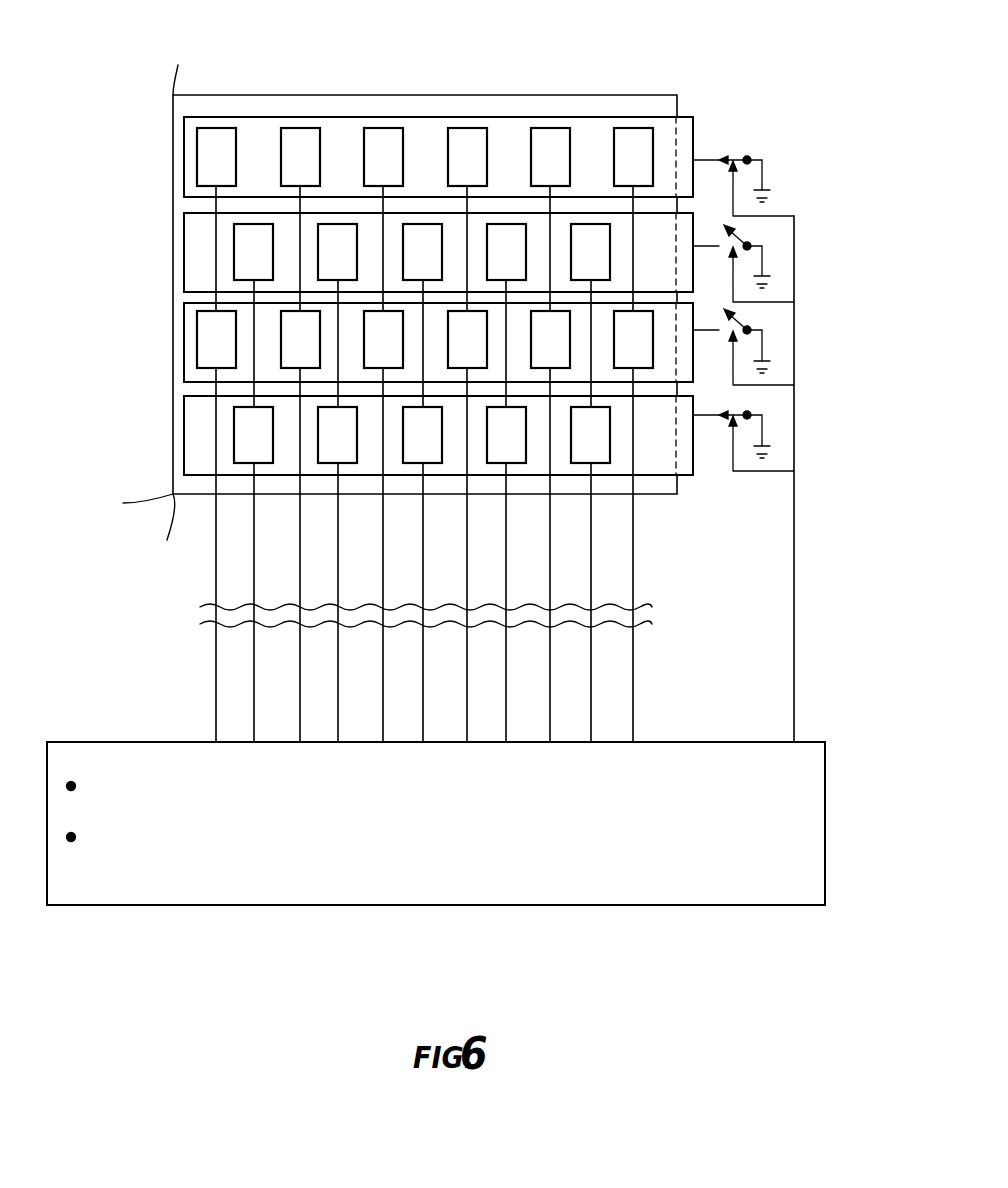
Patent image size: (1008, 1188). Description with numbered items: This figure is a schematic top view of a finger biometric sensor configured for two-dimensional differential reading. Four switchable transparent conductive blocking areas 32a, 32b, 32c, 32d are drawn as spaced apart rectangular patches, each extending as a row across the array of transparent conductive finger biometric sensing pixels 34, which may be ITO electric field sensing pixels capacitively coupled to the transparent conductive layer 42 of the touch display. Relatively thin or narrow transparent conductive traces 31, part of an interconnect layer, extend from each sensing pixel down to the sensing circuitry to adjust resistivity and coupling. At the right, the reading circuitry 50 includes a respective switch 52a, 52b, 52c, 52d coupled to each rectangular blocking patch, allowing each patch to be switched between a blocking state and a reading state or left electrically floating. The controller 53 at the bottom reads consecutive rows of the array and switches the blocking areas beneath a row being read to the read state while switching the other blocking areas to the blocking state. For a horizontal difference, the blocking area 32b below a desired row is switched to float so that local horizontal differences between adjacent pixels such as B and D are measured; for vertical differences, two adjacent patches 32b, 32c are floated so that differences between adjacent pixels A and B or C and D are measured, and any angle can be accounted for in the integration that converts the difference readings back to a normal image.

The transparent conductive layer 42 is at (182, 110).
The transparent conductive traces 31 is at (215, 267).
The switchable transparent conductive blocking area 32a is at (256, 135).
The switchable transparent conductive blocking area 32b is at (197, 243).
The switchable transparent conductive blocking area 32c is at (246, 367).
The switchable transparent conductive blocking area 32d is at (197, 427).
The array of transparent conductive finger biometric sensing pixels 34 is at (470, 135).
The switch 52a is at (745, 160).
The switch 52b is at (742, 240).
The switch 52c is at (748, 322).
The switch 52d is at (740, 416).
The reading circuitry 50 is at (819, 626).
The controller 53 is at (167, 908).